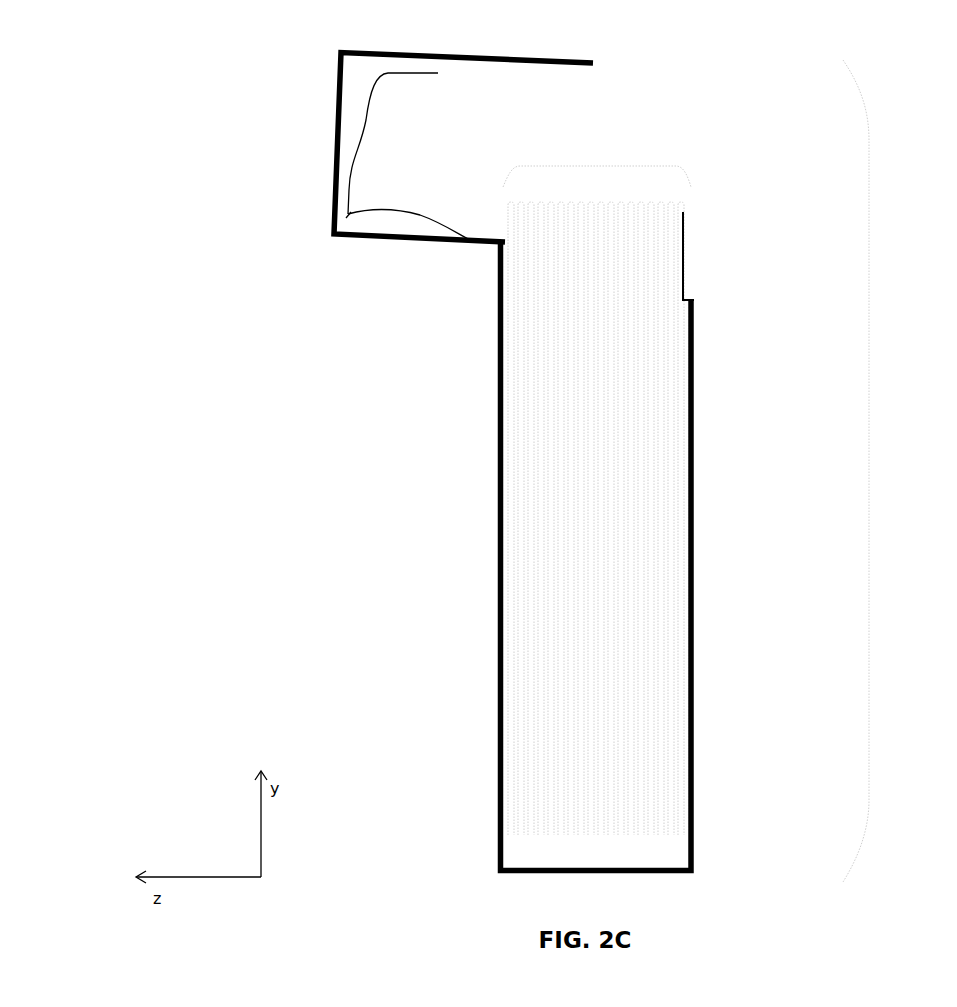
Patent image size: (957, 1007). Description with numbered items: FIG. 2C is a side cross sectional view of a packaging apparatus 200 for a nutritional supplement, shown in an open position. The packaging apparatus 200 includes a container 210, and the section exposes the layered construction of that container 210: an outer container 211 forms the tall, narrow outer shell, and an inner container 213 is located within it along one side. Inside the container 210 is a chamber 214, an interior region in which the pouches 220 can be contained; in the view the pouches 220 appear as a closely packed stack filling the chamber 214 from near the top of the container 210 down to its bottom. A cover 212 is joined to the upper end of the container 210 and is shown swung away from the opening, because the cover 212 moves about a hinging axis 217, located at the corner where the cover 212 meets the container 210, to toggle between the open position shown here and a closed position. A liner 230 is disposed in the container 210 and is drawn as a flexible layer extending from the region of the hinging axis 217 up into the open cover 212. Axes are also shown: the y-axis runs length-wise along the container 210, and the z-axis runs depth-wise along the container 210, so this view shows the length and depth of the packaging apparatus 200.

The packaging apparatus 200 is at (208, 105).
The container 210 is at (869, 472).
The outer container 211 is at (695, 555).
The cover 212 is at (334, 152).
The inner container 213 is at (683, 265).
The chamber 214 is at (583, 860).
The hinging axis 217 is at (474, 246).
The pouches 220 is at (597, 166).
The liner 230 is at (366, 120).